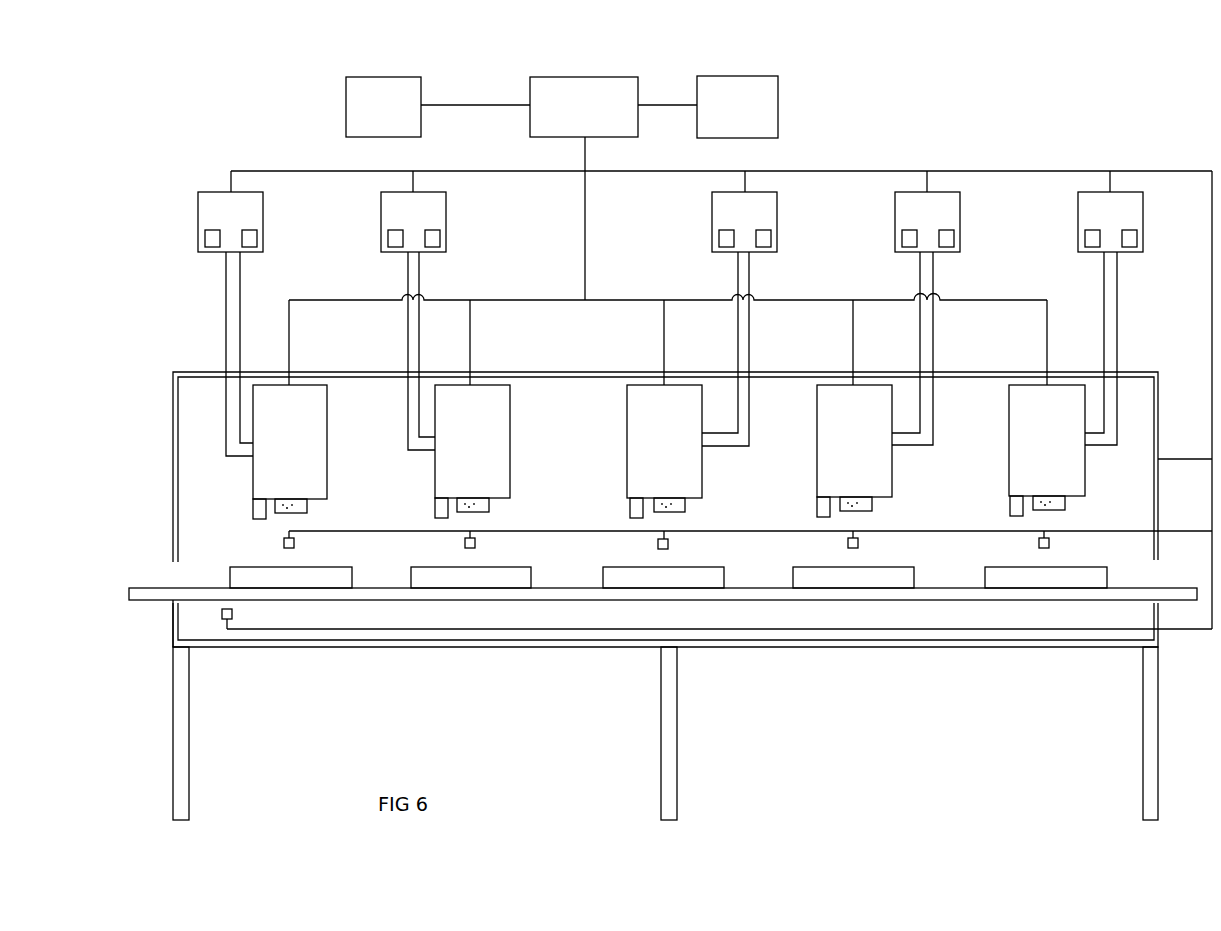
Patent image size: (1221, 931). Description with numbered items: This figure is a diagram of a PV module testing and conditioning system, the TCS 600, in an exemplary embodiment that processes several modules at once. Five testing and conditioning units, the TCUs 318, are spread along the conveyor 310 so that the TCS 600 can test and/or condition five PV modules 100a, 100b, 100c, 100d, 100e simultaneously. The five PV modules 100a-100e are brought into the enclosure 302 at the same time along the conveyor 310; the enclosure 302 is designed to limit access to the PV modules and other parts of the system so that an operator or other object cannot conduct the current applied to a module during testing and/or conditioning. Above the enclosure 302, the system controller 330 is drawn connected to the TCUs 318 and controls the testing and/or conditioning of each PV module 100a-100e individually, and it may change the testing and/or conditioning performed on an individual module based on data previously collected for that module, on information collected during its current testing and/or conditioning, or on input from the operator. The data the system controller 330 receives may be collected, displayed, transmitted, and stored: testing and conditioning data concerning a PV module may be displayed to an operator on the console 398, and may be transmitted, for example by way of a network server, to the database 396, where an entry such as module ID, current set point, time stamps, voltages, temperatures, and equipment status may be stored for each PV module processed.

The testing and conditioning system 600 is at (836, 114).
The system controller 330 is at (585, 77).
The database 396 is at (346, 105).
The console 398 is at (778, 105).
The testing and conditioning unit 318 is at (198, 276).
The enclosure 302 is at (172, 383).
The conveyor 310 is at (158, 605).
The PV module 100a is at (291, 578).
The PV module 100b is at (471, 578).
The PV module 100c is at (663, 578).
The PV module 100d is at (853, 578).
The PV module 100e is at (1046, 578).